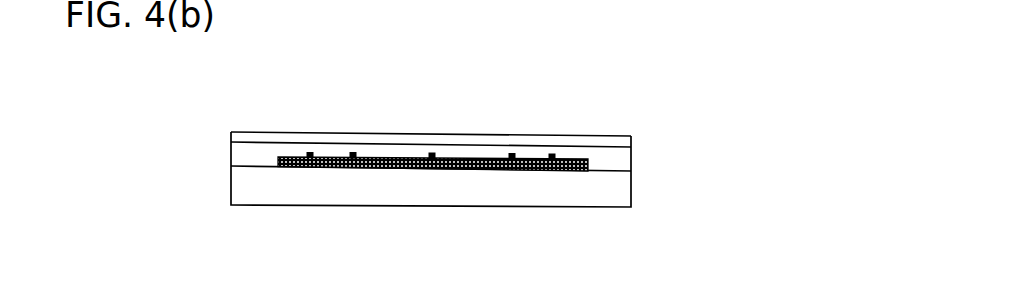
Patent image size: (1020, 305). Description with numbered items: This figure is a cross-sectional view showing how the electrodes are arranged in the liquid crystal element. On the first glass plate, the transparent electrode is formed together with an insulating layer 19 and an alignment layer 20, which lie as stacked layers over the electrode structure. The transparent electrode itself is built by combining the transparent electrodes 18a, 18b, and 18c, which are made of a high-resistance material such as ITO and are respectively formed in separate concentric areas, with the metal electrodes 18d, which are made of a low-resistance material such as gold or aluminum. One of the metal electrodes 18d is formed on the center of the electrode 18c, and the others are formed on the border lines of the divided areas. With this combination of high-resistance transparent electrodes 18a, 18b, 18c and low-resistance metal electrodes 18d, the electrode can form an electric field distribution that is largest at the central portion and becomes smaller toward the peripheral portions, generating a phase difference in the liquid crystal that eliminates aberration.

The transparent electrode 18a is at (586, 166).
The transparent electrode 18b is at (548, 169).
The transparent electrode 18c is at (467, 169).
The metal electrodes 18d is at (440, 146).
The insulating layer 19 is at (245, 153).
The alignment layer 20 is at (278, 138).